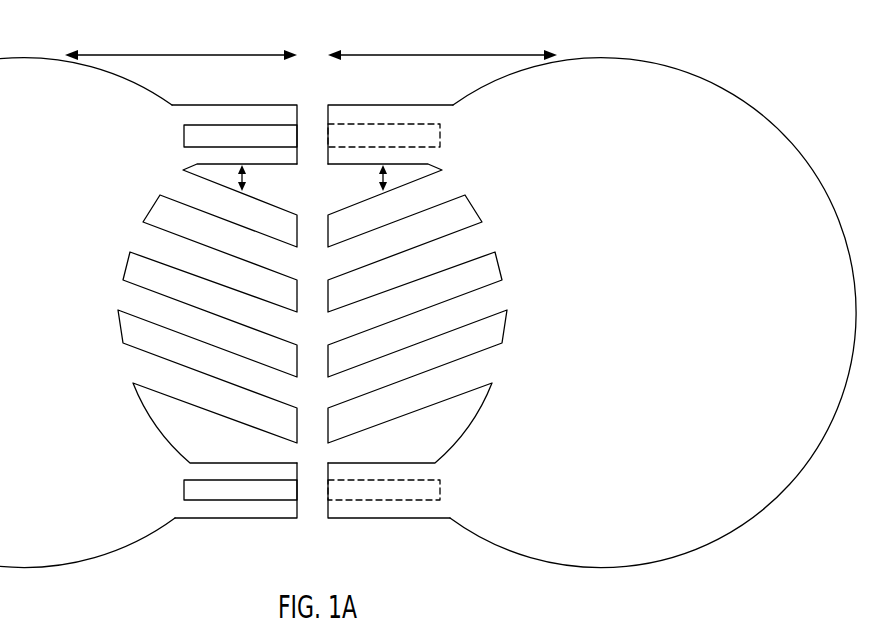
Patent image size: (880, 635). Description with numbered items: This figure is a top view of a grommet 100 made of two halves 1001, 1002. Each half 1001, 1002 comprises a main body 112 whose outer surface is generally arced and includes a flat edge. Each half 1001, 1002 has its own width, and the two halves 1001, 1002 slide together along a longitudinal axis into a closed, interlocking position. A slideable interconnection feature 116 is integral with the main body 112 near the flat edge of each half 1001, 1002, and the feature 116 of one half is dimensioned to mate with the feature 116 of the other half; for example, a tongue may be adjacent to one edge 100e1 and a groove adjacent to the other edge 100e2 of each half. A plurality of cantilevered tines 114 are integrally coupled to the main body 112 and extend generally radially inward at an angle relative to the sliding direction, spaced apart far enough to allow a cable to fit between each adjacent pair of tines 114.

The grommet 100 is at (428, 288).
The first half of the grommet 1001 is at (234, 116).
The second half of the grommet 1002 is at (390, 116).
The edge of each half 100e1 is at (232, 518).
The other edge of each half 100e2 is at (370, 518).
The main body 112 is at (110, 194).
The cantilevered tine 114 is at (152, 308).
The slideable interconnection feature 116 is at (205, 488).